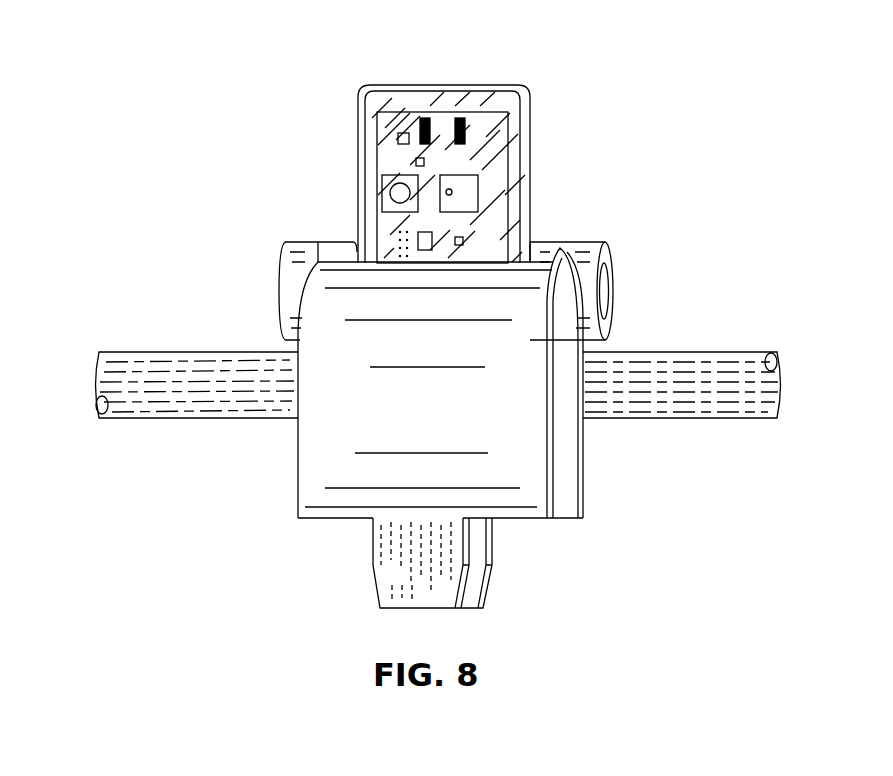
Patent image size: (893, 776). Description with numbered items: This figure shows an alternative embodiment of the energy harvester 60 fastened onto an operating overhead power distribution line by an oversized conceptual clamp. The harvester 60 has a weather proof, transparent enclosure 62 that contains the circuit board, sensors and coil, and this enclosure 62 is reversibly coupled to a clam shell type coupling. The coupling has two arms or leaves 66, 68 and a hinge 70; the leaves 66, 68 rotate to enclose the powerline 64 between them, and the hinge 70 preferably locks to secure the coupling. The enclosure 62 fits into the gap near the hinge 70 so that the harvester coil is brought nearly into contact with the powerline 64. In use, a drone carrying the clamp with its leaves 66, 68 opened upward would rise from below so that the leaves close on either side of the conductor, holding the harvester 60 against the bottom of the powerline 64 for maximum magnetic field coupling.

The energy harvester 60 is at (228, 72).
The weather proof enclosure 62 is at (412, 86).
The powerline 64 is at (130, 352).
The leaf 66 is at (315, 496).
The leaf 68 is at (570, 476).
The hinge 70 is at (612, 286).